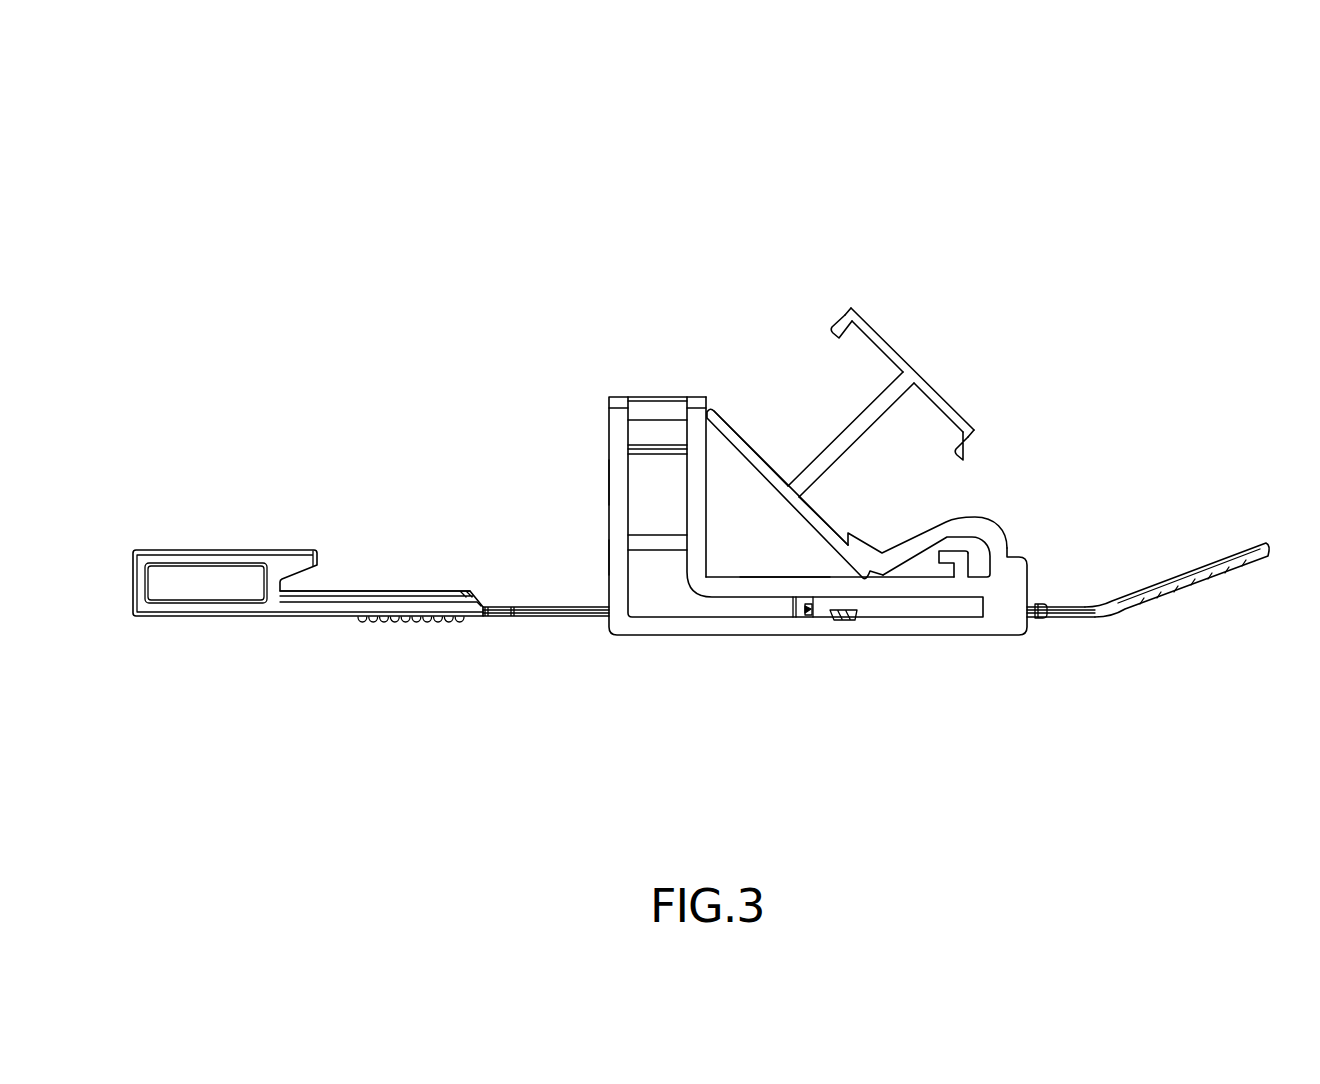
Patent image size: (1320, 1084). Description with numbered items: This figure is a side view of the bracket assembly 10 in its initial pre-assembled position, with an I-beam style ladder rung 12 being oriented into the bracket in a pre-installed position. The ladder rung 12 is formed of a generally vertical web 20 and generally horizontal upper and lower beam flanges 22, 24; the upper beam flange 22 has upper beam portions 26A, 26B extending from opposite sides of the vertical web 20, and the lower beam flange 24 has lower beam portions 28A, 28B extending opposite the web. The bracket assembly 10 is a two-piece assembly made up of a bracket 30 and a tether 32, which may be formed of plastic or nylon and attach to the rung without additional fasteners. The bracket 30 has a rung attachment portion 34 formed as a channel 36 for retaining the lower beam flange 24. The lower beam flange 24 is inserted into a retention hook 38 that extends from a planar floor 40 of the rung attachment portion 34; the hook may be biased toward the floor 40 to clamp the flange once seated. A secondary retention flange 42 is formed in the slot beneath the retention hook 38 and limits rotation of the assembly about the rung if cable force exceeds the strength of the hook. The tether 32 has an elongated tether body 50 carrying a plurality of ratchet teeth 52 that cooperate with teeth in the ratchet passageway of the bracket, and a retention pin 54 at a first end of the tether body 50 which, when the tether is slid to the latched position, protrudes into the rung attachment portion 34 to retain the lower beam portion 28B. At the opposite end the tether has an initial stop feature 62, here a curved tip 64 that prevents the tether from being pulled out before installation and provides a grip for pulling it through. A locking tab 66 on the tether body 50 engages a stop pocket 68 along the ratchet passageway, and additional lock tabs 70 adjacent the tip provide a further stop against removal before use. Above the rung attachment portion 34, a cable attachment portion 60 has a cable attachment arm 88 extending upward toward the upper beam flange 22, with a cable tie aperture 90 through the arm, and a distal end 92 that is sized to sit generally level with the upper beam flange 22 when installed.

The bracket assembly 10 is at (791, 163).
The ladder rung 12 is at (885, 333).
The vertical web 20 is at (863, 413).
The upper beam flange 22 is at (925, 375).
The lower beam flange 24 is at (753, 449).
The upper beam portion 26A is at (863, 315).
The upper beam portion 26B is at (967, 417).
The lower beam portion 28A is at (818, 512).
The lower beam portion 28B is at (728, 426).
The bracket 30 is at (1027, 560).
The tether 32 is at (358, 591).
The rung attachment portion 34 is at (725, 577).
The channel 36 is at (707, 527).
The retention hook 38 is at (915, 537).
The planar floor 40 is at (752, 577).
The secondary retention flange 42 is at (947, 557).
The tether body 50 is at (501, 617).
The ratchet teeth 52 is at (383, 620).
The retention pin 54 is at (278, 551).
The cable attachment portion 60 is at (608, 557).
The initial stop feature 62 is at (792, 603).
The curved tip 64 is at (1110, 602).
The locking tab 66 is at (810, 617).
The stop pocket 68 is at (797, 618).
The additional lock tabs 70 is at (1041, 618).
The cable attachment arm 88 is at (608, 483).
The cable tie aperture 90 is at (642, 432).
The distal end 92 is at (645, 397).